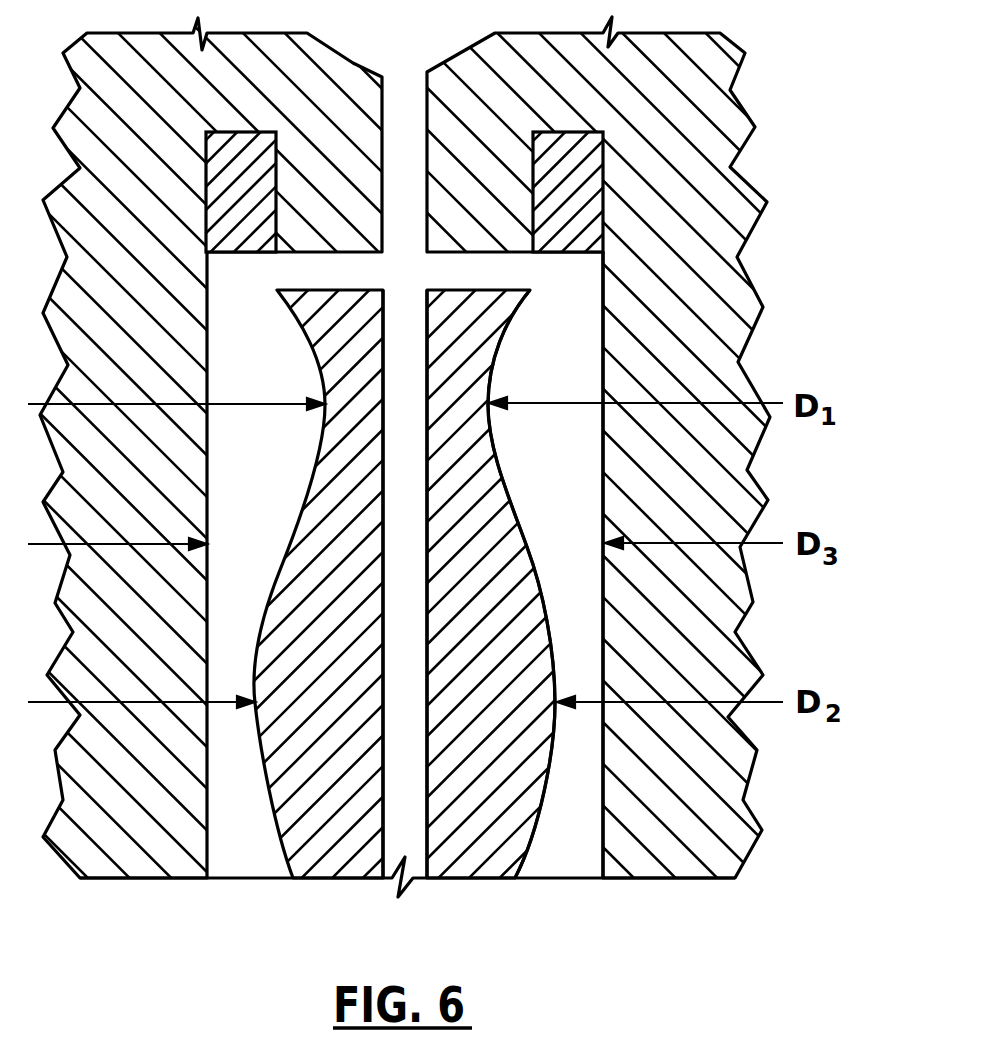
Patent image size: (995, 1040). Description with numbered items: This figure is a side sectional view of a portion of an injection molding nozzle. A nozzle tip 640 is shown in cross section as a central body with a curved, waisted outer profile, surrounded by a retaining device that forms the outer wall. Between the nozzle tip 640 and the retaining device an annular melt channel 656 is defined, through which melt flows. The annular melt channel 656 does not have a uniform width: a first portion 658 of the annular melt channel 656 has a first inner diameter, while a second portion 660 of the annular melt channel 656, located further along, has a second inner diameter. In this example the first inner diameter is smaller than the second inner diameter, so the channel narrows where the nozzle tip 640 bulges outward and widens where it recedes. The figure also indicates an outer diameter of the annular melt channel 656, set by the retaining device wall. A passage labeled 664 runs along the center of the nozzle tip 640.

The nozzle tip 640 is at (497, 500).
The first portion of annular melt channel 658 is at (558, 503).
The central bore 664 is at (407, 327).
The annular melt channel 656 is at (573, 625).
The second portion of annular melt channel 660 is at (575, 807).